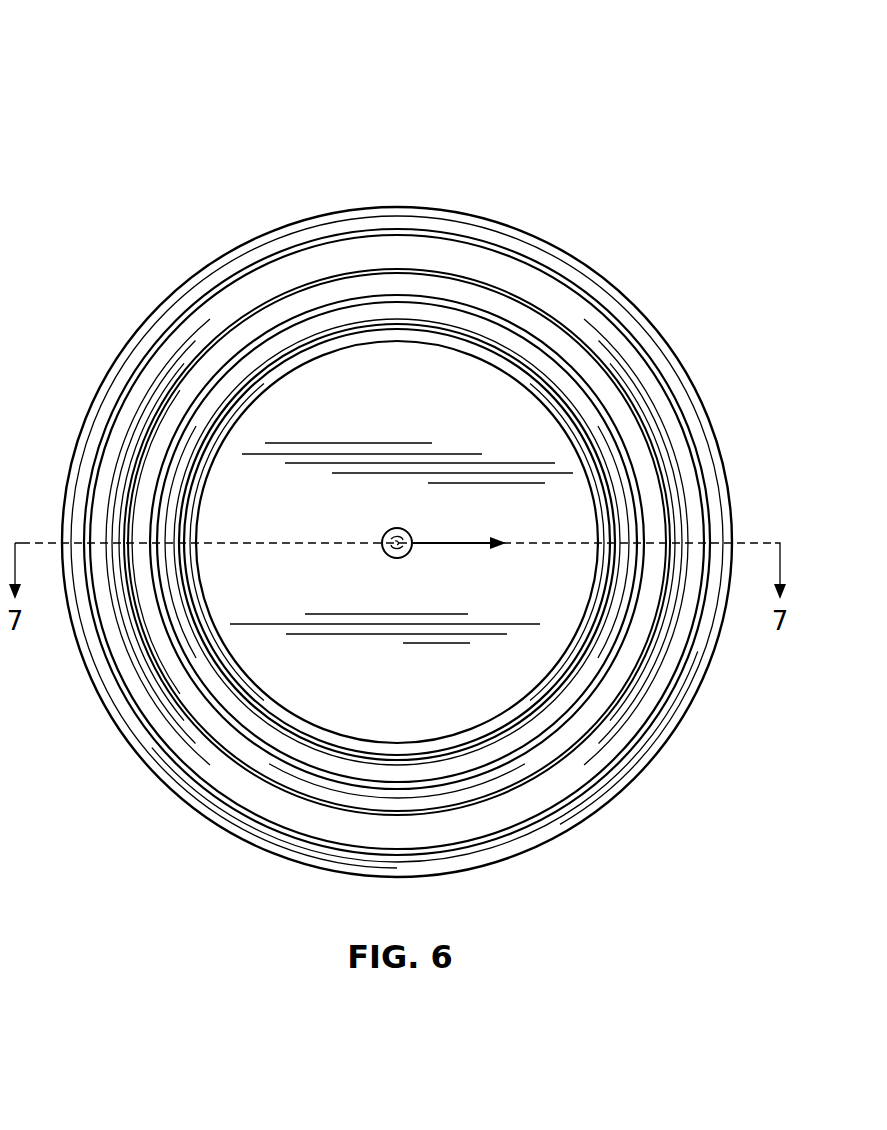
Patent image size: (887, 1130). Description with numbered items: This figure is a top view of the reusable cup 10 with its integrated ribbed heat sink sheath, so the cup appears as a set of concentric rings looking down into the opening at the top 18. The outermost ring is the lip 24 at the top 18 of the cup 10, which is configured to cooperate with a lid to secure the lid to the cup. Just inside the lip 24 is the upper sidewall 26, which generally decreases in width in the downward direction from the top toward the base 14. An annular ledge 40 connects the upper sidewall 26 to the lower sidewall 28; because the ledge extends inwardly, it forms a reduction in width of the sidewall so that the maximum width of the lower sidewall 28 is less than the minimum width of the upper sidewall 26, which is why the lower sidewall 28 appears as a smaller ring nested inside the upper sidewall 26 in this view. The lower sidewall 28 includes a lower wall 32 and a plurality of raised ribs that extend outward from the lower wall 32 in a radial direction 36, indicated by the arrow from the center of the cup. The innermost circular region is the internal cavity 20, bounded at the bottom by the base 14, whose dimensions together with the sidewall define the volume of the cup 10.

The reusable cup 10 is at (108, 52).
The base 14 is at (477, 366).
The top 18 is at (607, 287).
The internal cavity 20 is at (401, 543).
The lip 24 is at (677, 350).
The upper sidewall 26 is at (207, 315).
The lower sidewall 28 is at (347, 318).
The lower wall 32 is at (300, 328).
The radial direction 36 is at (453, 543).
The annular ledge 40 is at (383, 285).